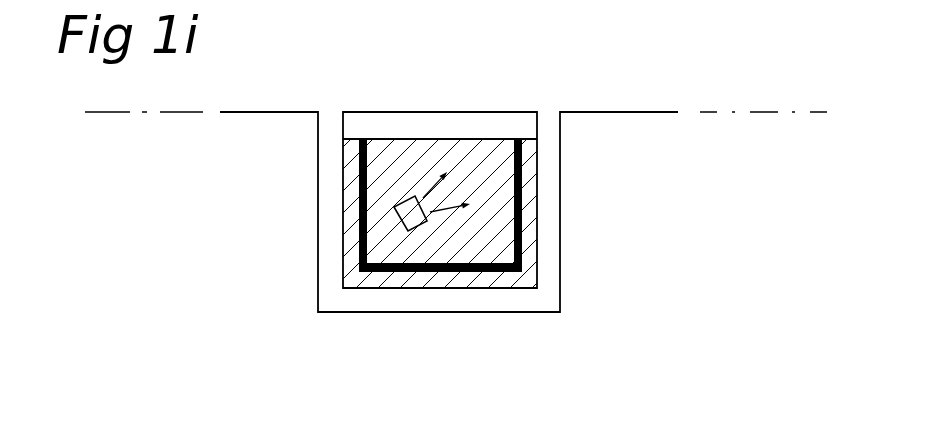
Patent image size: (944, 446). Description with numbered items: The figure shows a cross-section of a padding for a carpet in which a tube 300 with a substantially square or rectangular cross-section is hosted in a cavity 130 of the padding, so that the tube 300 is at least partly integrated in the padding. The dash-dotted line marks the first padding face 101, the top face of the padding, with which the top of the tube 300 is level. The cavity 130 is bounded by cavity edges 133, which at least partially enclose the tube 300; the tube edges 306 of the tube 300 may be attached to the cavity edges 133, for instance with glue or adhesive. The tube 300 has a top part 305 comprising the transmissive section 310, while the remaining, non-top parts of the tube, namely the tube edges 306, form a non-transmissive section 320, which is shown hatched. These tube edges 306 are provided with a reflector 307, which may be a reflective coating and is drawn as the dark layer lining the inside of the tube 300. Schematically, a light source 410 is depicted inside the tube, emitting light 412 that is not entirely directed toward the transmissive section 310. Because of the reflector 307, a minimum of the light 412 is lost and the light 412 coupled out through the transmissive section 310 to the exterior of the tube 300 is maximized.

The first padding face 101 is at (755, 112).
The cavity 130 is at (547, 117).
The cavity edges 133 is at (562, 220).
The tube 300 is at (447, 88).
The top part 305 is at (485, 110).
The transmissive section 310 is at (383, 131).
The non-transmissive section 320 is at (528, 240).
The tube edges 306 is at (352, 248).
The reflector 307 is at (422, 263).
The light source 410 is at (395, 208).
The light 412 is at (447, 211).